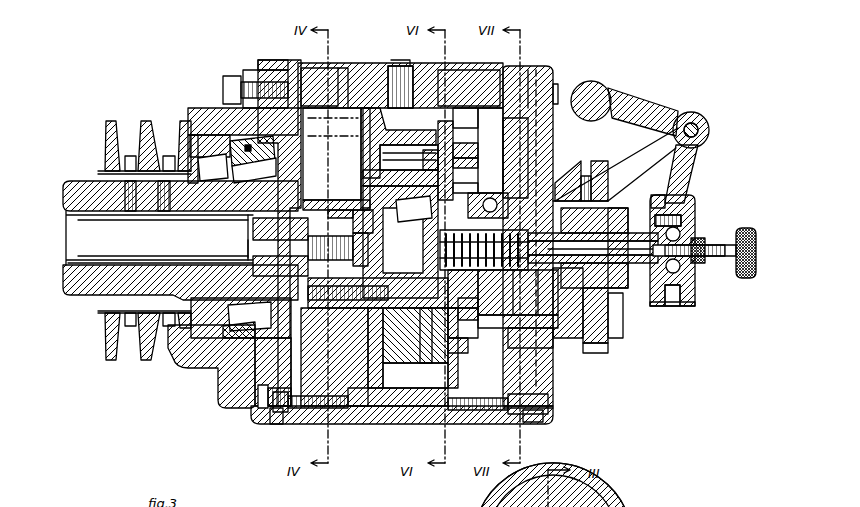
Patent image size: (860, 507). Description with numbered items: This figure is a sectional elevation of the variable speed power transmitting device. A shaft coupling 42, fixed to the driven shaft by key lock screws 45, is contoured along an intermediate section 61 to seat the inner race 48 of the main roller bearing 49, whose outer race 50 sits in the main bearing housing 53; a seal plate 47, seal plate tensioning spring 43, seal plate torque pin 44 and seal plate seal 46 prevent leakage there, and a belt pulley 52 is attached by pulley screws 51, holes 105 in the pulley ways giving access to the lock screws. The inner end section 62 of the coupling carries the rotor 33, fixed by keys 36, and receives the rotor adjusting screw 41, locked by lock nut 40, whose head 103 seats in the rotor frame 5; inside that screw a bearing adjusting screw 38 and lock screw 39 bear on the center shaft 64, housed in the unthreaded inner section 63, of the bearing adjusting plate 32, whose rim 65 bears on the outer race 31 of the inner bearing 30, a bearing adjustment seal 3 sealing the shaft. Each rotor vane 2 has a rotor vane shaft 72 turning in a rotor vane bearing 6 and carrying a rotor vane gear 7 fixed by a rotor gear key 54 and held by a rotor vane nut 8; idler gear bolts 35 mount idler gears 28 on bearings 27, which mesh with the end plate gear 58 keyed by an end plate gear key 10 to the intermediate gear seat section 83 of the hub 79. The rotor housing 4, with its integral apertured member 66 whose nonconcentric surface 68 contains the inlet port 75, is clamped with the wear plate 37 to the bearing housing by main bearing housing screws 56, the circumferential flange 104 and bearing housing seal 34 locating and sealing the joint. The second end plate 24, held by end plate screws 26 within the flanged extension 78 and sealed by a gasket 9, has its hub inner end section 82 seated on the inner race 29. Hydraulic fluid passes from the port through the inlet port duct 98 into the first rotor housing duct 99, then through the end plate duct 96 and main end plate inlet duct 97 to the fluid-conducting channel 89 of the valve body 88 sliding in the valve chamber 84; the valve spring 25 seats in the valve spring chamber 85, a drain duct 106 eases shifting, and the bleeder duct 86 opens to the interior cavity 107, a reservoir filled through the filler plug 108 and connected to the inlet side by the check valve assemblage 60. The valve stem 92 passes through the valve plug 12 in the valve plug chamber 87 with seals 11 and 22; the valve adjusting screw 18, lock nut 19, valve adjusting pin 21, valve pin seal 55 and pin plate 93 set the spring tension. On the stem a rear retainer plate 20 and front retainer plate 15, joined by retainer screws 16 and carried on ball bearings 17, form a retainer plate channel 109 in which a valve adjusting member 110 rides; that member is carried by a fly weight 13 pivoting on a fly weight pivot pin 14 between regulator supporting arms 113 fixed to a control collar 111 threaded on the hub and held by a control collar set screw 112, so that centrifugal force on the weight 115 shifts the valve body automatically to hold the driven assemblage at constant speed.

The rotor vane 2 is at (278, 62).
The bearing adjustment seal 3 is at (350, 212).
The rotor housing 4 is at (352, 58).
The rotor frame 5 is at (368, 125).
The rotor vane bearing 6 is at (404, 122).
The rotor vane gear 7 is at (438, 120).
The rotor vane nut 8 is at (455, 140).
The gasket or seal 9 is at (538, 68).
The end plate gear key 10 is at (482, 185).
The seal 11 is at (568, 162).
The valve plug 12 is at (615, 285).
The lever 13 is at (680, 105).
The fly weight pivot pin 14 is at (696, 121).
The front retainer plate 15 is at (688, 189).
The retainer screws 16 is at (688, 206).
The ball bearings 17 is at (674, 224).
The valve adjusting screw 18 is at (738, 270).
The lock nut 19 is at (690, 252).
The rear retainer plate 20 is at (655, 300).
The valve adjusting pin 21 is at (605, 270).
The seal 22 is at (578, 300).
The second end plate 24 is at (545, 372).
The valve spring 25 is at (490, 285).
The end plate screws 26 is at (545, 396).
The bearing 27 is at (452, 320).
The idler gear 28 is at (448, 340).
The inner race of second bearing 29 is at (406, 358).
The inner bearing 30 is at (395, 340).
The outer race of inner bearing 31 is at (368, 350).
The bearing adjusting plate 32 is at (360, 408).
The rotor 33 is at (335, 335).
The bearing housing seal 34 is at (268, 417).
The idler gear bolts 35 is at (462, 312).
The keys 36 is at (266, 300).
The wear plate 37 is at (225, 372).
The bearing adjusting screw 38 is at (318, 262).
The lock screw 39 is at (245, 246).
The lock nut 40 is at (245, 220).
The rotor adjusting screw 41 is at (215, 243).
The shaft coupling 42 is at (65, 288).
The seal plate tensioning spring 43 is at (205, 210).
The seal plate torque pin 44 is at (170, 212).
The key lock screws 45 is at (95, 215).
The seal plate seal 46 is at (125, 205).
The seal plate 47 is at (130, 162).
The inner race 48 is at (205, 158).
The roller bearing 49 is at (200, 135).
The outer race 50 is at (215, 108).
The pulley screws 51 is at (218, 82).
The belt pulley 52 is at (140, 128).
The main bearing housing 53 is at (248, 60).
The rotor gear key 54 is at (460, 132).
The valve pin seal 55 is at (618, 205).
The main bearing housing screws 56 is at (245, 415).
The end plate gear 58 is at (458, 180).
The check valve assemblage 60 is at (480, 190).
The intermediate section 61 is at (205, 290).
The inner end section 62 is at (342, 262).
The inner section 63 is at (335, 195).
The center shaft 64 is at (342, 200).
The rim 65 is at (395, 285).
The apertured member 66 is at (330, 58).
The nonconcentric surface 68 is at (490, 506).
The rotor vane shaft 72 is at (456, 150).
The inlet port 75 is at (318, 200).
The flanged extension 78 is at (528, 60).
The hub 79 is at (552, 320).
The inner end section 82 is at (418, 345).
The intermediate gear seat section 83 is at (462, 300).
The valve chamber 84 is at (560, 175).
The valve spring chamber 85 is at (512, 285).
The bleeder duct 86 is at (440, 355).
The valve plug chamber 87 is at (600, 322).
The valve body 88 is at (500, 262).
The fluid-conducting channel 89 is at (530, 285).
The valve stem 92 is at (545, 300).
The pin plate 93 is at (505, 168).
The end plate duct 96 is at (525, 50).
The main end plate inlet duct 97 is at (540, 84).
The inlet port duct 98 is at (308, 62).
The first rotor housing duct 99 is at (460, 70).
The head 103 is at (305, 140).
The circumferential flange 104 is at (258, 52).
The holes 105 is at (105, 130).
The drain duct 106 is at (515, 290).
The interior cavity 107 is at (538, 108).
The filler plug 108 is at (392, 58).
The retainer plate channel 109 is at (665, 290).
The valve adjusting member 110 is at (680, 155).
The control collar 111 is at (598, 335).
The control collar set screw 112 is at (578, 168).
The regulator supporting arms 113 is at (612, 150).
The weight 115 is at (600, 86).